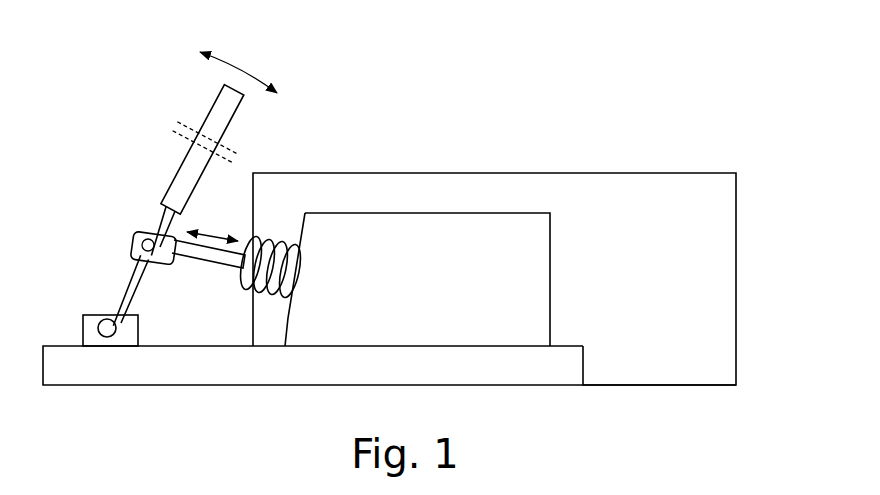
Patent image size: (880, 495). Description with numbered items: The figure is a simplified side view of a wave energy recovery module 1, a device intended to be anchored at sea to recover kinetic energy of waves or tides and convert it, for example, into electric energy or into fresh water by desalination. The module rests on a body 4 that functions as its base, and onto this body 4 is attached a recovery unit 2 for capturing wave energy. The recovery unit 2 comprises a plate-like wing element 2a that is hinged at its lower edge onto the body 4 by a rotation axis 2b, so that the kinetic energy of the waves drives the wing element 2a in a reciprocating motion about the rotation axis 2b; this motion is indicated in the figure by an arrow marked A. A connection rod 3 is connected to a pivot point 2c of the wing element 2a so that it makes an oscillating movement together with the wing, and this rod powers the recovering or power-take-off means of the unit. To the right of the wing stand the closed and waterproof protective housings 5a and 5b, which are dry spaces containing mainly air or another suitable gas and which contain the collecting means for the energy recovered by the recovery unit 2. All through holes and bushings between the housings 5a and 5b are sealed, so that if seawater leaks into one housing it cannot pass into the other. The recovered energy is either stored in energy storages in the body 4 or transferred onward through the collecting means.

The wave energy recovery module 1 is at (512, 98).
The recovery unit 2 is at (135, 175).
The wing element 2a is at (220, 98).
The rotation axis 2b is at (98, 317).
The pivot point 2c is at (135, 237).
The connection rod 3 is at (210, 257).
The body 4 is at (210, 372).
The protective housing 5a is at (545, 270).
The protective housing 5b is at (698, 177).